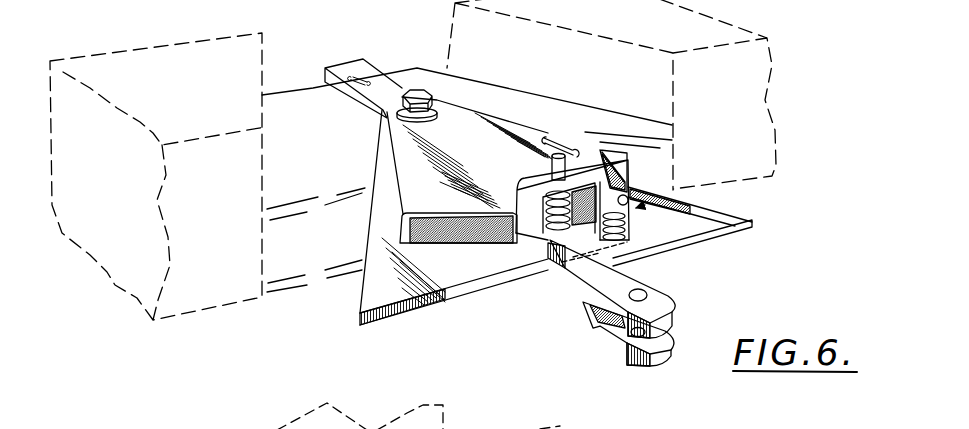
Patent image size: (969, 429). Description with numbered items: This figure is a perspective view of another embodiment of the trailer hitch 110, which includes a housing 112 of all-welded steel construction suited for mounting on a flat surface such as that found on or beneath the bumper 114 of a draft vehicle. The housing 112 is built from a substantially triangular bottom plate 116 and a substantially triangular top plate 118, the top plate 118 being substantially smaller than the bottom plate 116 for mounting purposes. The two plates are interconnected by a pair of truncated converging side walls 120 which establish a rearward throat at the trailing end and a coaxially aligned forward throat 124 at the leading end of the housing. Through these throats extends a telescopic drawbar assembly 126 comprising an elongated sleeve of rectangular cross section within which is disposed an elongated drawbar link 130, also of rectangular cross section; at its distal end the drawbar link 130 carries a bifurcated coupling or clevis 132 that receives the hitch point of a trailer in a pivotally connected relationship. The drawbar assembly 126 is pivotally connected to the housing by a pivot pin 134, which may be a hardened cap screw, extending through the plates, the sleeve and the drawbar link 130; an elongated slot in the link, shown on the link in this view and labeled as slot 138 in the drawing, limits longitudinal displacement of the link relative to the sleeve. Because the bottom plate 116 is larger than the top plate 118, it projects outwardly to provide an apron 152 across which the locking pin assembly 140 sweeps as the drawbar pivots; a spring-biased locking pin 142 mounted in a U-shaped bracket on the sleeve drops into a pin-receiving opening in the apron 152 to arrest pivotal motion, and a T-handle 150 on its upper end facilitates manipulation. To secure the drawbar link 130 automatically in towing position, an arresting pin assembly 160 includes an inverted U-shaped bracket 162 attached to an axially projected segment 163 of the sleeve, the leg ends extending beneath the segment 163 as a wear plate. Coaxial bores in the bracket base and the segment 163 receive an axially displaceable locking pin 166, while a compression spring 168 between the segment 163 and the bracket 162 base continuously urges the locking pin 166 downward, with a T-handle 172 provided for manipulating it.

The trailer hitch 110 is at (747, 245).
The housing 112 is at (522, 114).
The bumper 114 is at (765, 100).
The bottom plate 116 is at (473, 247).
The top plate 118 is at (453, 117).
The side walls 120 is at (407, 227).
The forward throat 124 is at (438, 237).
The telescopic drawbar assembly 126 is at (489, 226).
The drawbar link 130 is at (342, 72).
The clevis 132 is at (650, 362).
The pivot pin 134 is at (415, 90).
The slot 138 is at (372, 88).
The locking pin assembly 140 is at (677, 201).
The locking pin 142 is at (623, 248).
The T-handle 150 is at (600, 177).
The apron 152 is at (690, 210).
The arresting pin assembly 160 is at (511, 175).
The bracket 162 is at (527, 238).
The segment 163 is at (577, 226).
The locking pin 166 is at (522, 117).
The compression spring 168 is at (503, 192).
The T-handle 172 is at (568, 145).